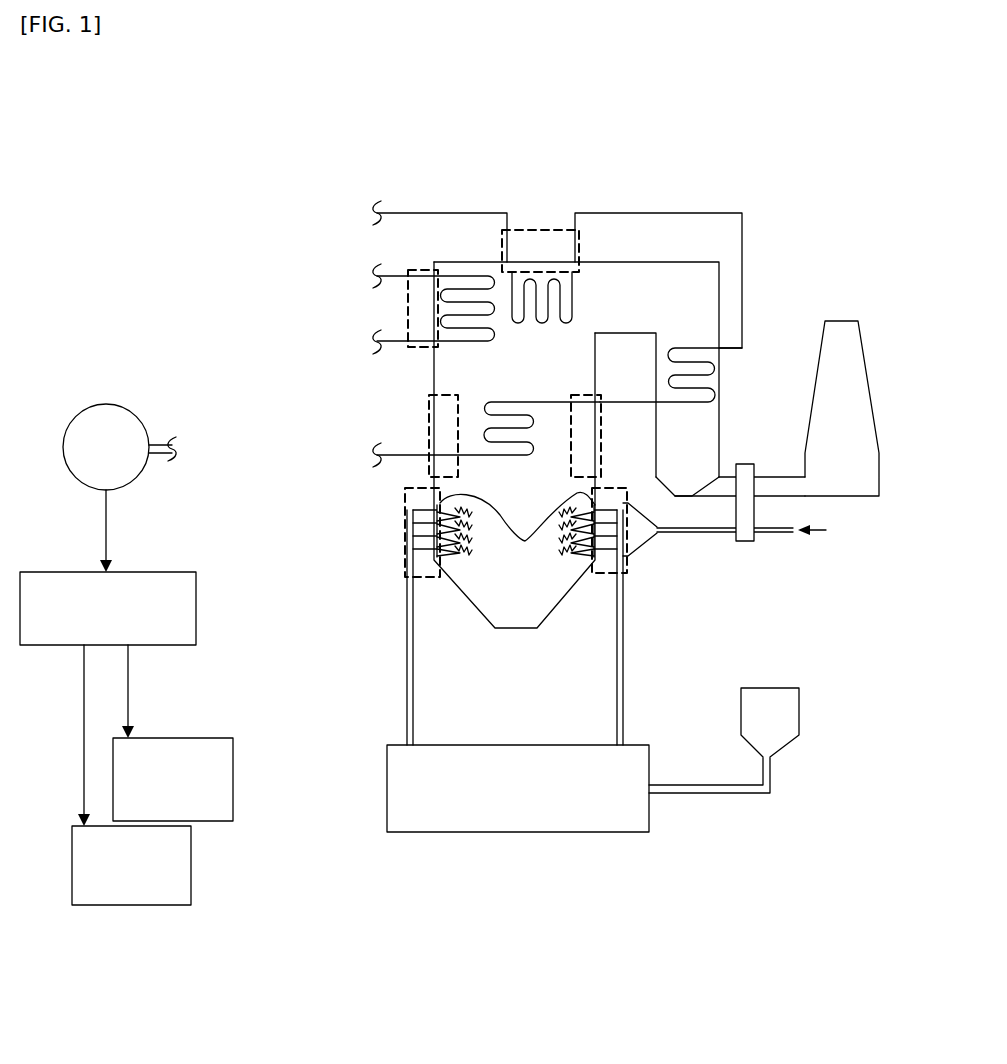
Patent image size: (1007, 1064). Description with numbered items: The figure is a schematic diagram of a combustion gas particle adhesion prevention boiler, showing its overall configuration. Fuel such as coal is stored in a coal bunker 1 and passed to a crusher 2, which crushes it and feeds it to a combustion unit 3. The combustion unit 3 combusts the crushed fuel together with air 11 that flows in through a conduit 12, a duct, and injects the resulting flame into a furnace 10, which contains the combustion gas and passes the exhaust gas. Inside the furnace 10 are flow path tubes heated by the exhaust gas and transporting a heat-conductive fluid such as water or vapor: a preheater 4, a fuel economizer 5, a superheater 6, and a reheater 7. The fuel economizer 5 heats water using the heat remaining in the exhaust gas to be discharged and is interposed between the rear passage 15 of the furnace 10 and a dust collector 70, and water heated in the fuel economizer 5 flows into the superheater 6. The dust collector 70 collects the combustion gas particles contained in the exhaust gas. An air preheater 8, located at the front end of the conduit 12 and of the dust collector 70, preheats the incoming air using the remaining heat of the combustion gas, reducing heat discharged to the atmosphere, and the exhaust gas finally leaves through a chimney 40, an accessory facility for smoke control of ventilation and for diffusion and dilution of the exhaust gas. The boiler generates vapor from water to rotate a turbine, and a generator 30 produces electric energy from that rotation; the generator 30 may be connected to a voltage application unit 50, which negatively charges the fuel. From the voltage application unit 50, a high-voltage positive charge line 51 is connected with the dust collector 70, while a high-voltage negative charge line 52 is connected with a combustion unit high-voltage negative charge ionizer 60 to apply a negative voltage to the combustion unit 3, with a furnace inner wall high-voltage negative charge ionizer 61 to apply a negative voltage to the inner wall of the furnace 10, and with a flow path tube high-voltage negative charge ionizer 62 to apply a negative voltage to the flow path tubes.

The coal bunker 1 is at (799, 712).
The crusher 2 is at (577, 833).
The combustion unit 3 is at (600, 506).
The preheater 4 is at (515, 457).
The fuel economizer 5 is at (694, 348).
The superheater 6 is at (578, 306).
The reheater 7 is at (470, 276).
The air preheater 8 is at (746, 543).
The furnace 10 is at (480, 562).
The air 11 is at (828, 542).
The conduit 12 is at (646, 548).
The rear passage 15 is at (660, 353).
The generator 30 is at (83, 410).
The chimney 40 is at (845, 320).
The voltage application unit 50 is at (196, 607).
The high-voltage positive charge line 51 is at (233, 778).
The high-voltage negative charge line 52 is at (191, 866).
The combustion unit high-voltage negative charge ionizer 60 is at (516, 530).
The furnace inner wall high-voltage negative charge ionizer 61 is at (447, 395).
The flow path tube high-voltage negative charge ionizer 62 is at (423, 270).
The dust collector 70 is at (680, 477).